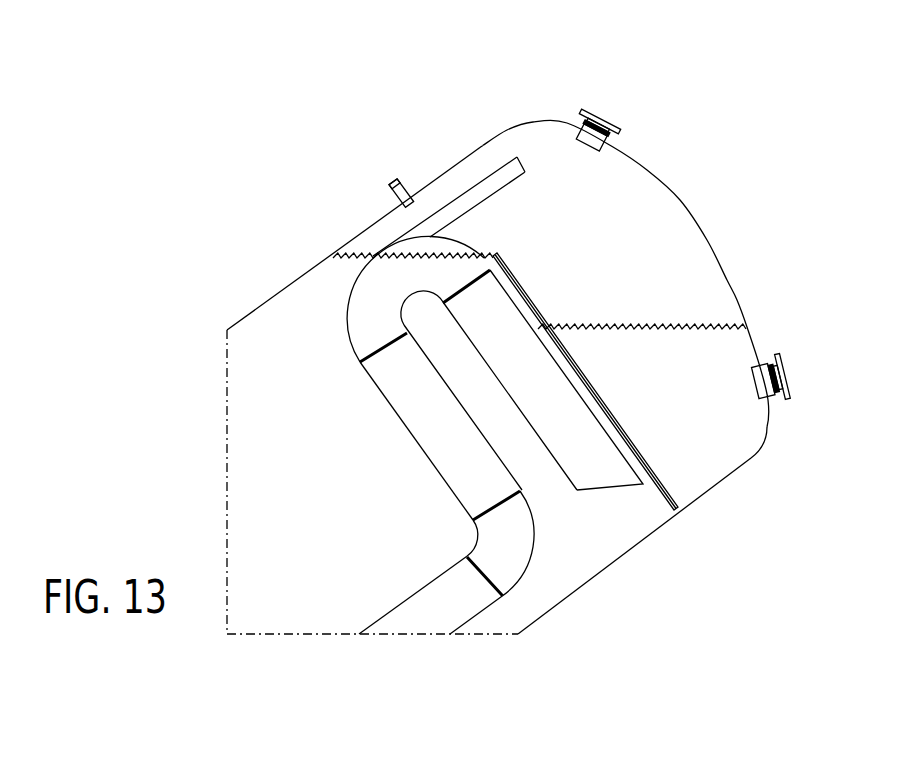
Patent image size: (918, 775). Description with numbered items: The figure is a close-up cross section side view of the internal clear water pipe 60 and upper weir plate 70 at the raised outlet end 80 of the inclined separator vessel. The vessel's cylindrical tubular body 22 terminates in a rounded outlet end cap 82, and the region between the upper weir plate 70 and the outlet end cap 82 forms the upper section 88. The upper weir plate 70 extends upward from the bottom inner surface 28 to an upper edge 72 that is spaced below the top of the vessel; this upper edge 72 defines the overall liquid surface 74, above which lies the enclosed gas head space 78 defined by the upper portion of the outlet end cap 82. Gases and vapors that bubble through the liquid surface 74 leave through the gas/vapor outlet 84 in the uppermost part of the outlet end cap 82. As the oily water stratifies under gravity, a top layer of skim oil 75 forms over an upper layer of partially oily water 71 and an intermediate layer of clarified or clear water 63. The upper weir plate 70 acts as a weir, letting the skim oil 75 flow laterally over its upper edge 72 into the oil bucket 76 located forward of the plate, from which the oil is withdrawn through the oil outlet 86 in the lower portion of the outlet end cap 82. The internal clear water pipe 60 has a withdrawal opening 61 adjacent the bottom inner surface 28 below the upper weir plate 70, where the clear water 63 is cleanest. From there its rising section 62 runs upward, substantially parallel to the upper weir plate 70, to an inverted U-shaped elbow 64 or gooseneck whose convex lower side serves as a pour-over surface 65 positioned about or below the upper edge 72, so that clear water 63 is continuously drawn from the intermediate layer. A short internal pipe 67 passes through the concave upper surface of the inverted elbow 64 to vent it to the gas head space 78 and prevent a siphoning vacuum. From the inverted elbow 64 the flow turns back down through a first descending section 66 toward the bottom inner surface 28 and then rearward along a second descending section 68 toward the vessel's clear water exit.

The cylindrical tubular body 22 is at (337, 249).
The bottom inner surface 28 is at (590, 576).
The internal clear water pipe 60 is at (385, 542).
The withdrawal opening 61 is at (621, 502).
The rising section 62 is at (514, 400).
The clarified or clear water 63 is at (576, 540).
The inverted U-shaped elbow 64 is at (347, 307).
The pour-over surface 65 is at (403, 300).
The first descending section 66 is at (418, 443).
The short internal pipe 67 is at (457, 207).
The second descending section 68 is at (415, 595).
The upper weir plate 70 is at (605, 408).
The partially oily water 71 is at (319, 435).
The upper edge 72 is at (497, 248).
The liquid surface 74 is at (337, 250).
The skim oil 75 is at (617, 246).
The oil bucket 76 is at (747, 418).
The enclosed gas head space 78 is at (538, 152).
The raised outlet end 80 is at (683, 133).
The outlet end cap 82 is at (703, 240).
The gas/vapor outlet 84 is at (603, 118).
The oil outlet 86 is at (788, 375).
The upper section 88 is at (656, 298).